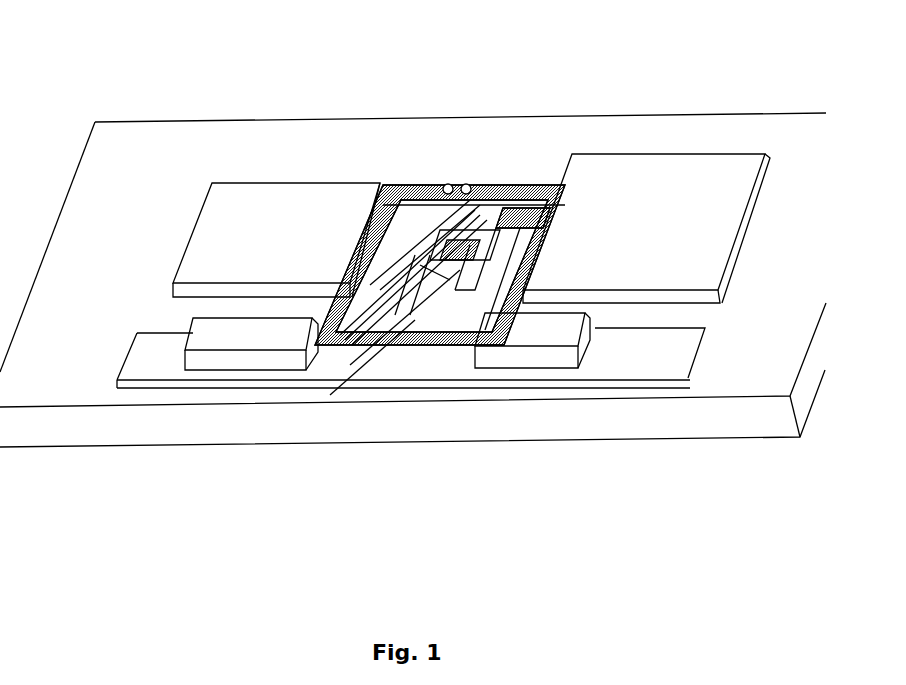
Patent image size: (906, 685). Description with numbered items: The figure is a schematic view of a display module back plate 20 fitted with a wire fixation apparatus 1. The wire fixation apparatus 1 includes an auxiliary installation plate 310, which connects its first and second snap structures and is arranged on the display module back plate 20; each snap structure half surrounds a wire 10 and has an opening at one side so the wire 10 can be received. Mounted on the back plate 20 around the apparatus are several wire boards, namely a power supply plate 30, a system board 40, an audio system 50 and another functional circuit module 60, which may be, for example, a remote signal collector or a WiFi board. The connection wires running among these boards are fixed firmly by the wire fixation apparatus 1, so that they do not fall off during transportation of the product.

The wire fixation apparatus 1 is at (395, 290).
The wire 10 is at (425, 196).
The display module back plate 20 is at (122, 172).
The power supply plate 30 is at (262, 203).
The system board 40 is at (648, 187).
The audio system 50 is at (198, 338).
The other functional circuit module 60 is at (540, 340).
The auxiliary installation plate 310 is at (493, 212).